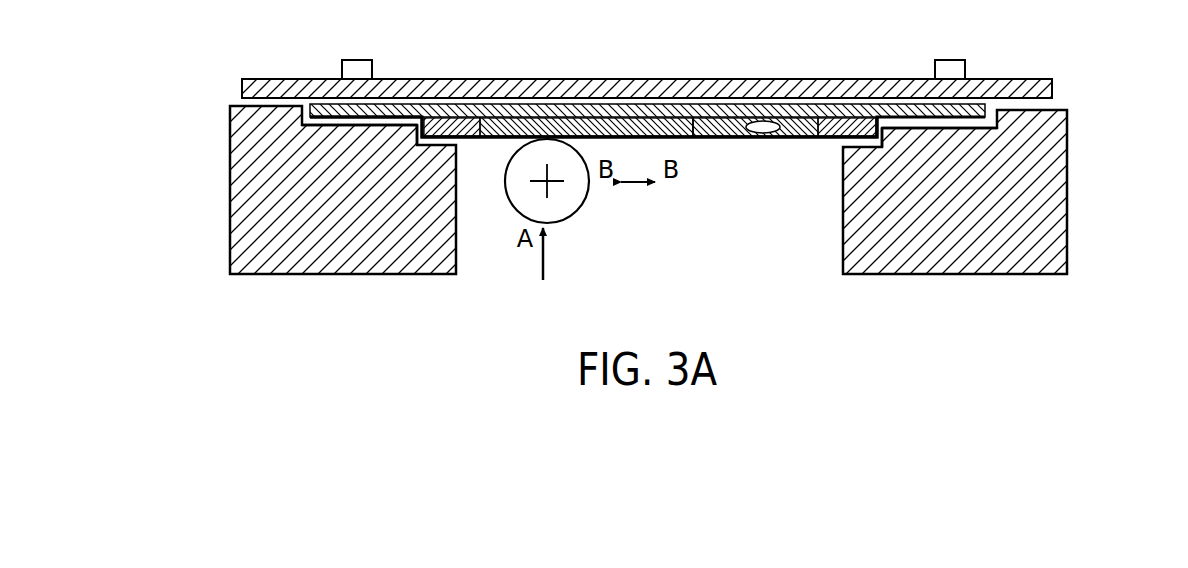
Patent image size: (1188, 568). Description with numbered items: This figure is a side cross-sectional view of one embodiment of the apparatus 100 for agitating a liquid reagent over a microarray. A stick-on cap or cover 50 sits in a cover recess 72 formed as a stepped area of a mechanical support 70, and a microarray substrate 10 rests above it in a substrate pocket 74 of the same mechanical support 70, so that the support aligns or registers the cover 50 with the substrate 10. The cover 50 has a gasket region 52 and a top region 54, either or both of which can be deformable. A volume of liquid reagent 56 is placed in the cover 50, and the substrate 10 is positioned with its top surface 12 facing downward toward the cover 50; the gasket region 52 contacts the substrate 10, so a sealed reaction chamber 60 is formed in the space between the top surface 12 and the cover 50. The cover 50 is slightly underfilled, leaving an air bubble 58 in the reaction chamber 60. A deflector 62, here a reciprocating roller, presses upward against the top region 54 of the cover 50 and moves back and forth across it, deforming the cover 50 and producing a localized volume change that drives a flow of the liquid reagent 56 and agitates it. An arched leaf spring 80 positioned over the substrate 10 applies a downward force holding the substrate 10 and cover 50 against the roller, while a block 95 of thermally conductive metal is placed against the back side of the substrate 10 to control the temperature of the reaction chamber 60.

The apparatus 100 is at (1137, 29).
The block 95 is at (813, 78).
The arched leaf spring 80 is at (357, 58).
The microarray substrate 10 is at (381, 103).
The mechanical support 70 is at (238, 188).
The cover recess 72 is at (417, 130).
The substrate pocket 74 is at (315, 124).
The top surface 12 is at (392, 118).
The cover 50 is at (494, 150).
The gasket region 52 is at (462, 138).
The liquid reagent 56 is at (692, 139).
The top region 54 is at (727, 139).
The air bubble 58 is at (767, 134).
The reaction chamber 60 is at (722, 128).
The deflector 62 is at (567, 197).